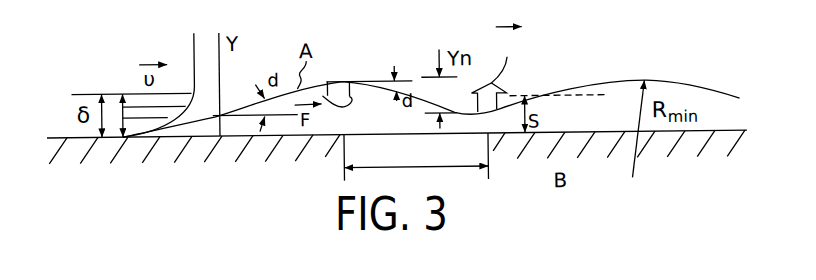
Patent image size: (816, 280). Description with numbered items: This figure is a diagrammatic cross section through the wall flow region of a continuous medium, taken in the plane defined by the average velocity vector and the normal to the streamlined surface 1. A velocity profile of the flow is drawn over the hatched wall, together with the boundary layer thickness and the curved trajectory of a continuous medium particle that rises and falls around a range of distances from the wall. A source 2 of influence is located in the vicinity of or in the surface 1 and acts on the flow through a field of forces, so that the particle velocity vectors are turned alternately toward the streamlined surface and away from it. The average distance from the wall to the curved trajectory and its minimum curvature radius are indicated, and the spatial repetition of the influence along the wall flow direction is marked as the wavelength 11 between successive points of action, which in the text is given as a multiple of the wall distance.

The surface 1 is at (613, 137).
The source of influence 2 is at (345, 136).
The wavelength of surface waviness 11 is at (416, 157).